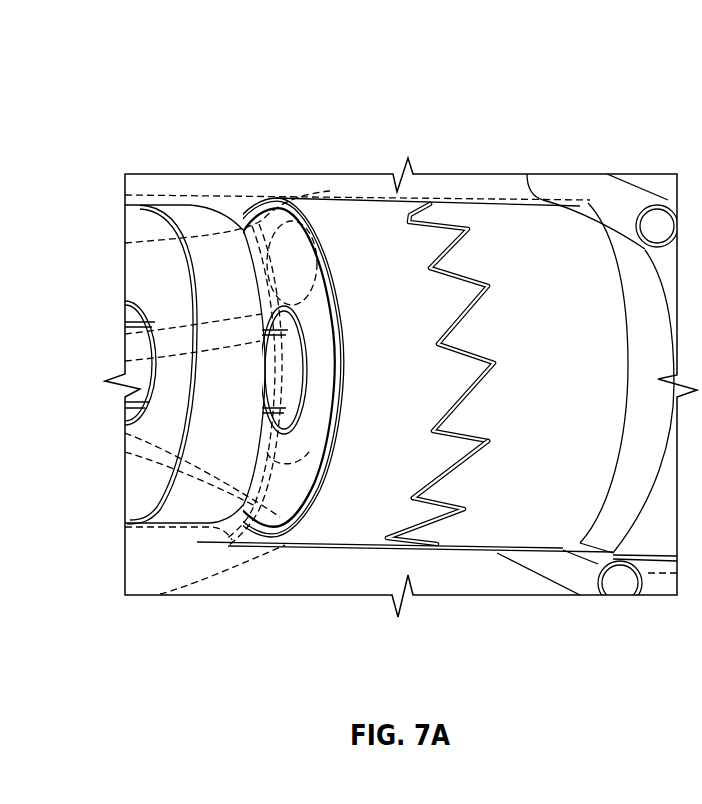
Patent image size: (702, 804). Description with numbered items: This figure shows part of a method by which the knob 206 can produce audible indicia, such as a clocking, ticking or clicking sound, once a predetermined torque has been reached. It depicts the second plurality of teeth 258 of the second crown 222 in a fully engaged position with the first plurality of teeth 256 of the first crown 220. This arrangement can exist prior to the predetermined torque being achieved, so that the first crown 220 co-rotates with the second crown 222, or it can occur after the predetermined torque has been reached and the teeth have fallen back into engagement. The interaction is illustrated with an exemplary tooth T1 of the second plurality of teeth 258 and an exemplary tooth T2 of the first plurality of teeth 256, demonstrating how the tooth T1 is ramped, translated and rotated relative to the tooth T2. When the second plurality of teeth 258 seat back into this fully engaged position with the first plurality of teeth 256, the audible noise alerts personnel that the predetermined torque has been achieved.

The knob 206 is at (214, 106).
The first crown 220 is at (540, 313).
The second crown 222 is at (395, 313).
The first plurality of teeth 256 is at (455, 495).
The second plurality of teeth 258 is at (447, 453).
The exemplary tooth T1 is at (436, 305).
The exemplary tooth T2 is at (484, 335).